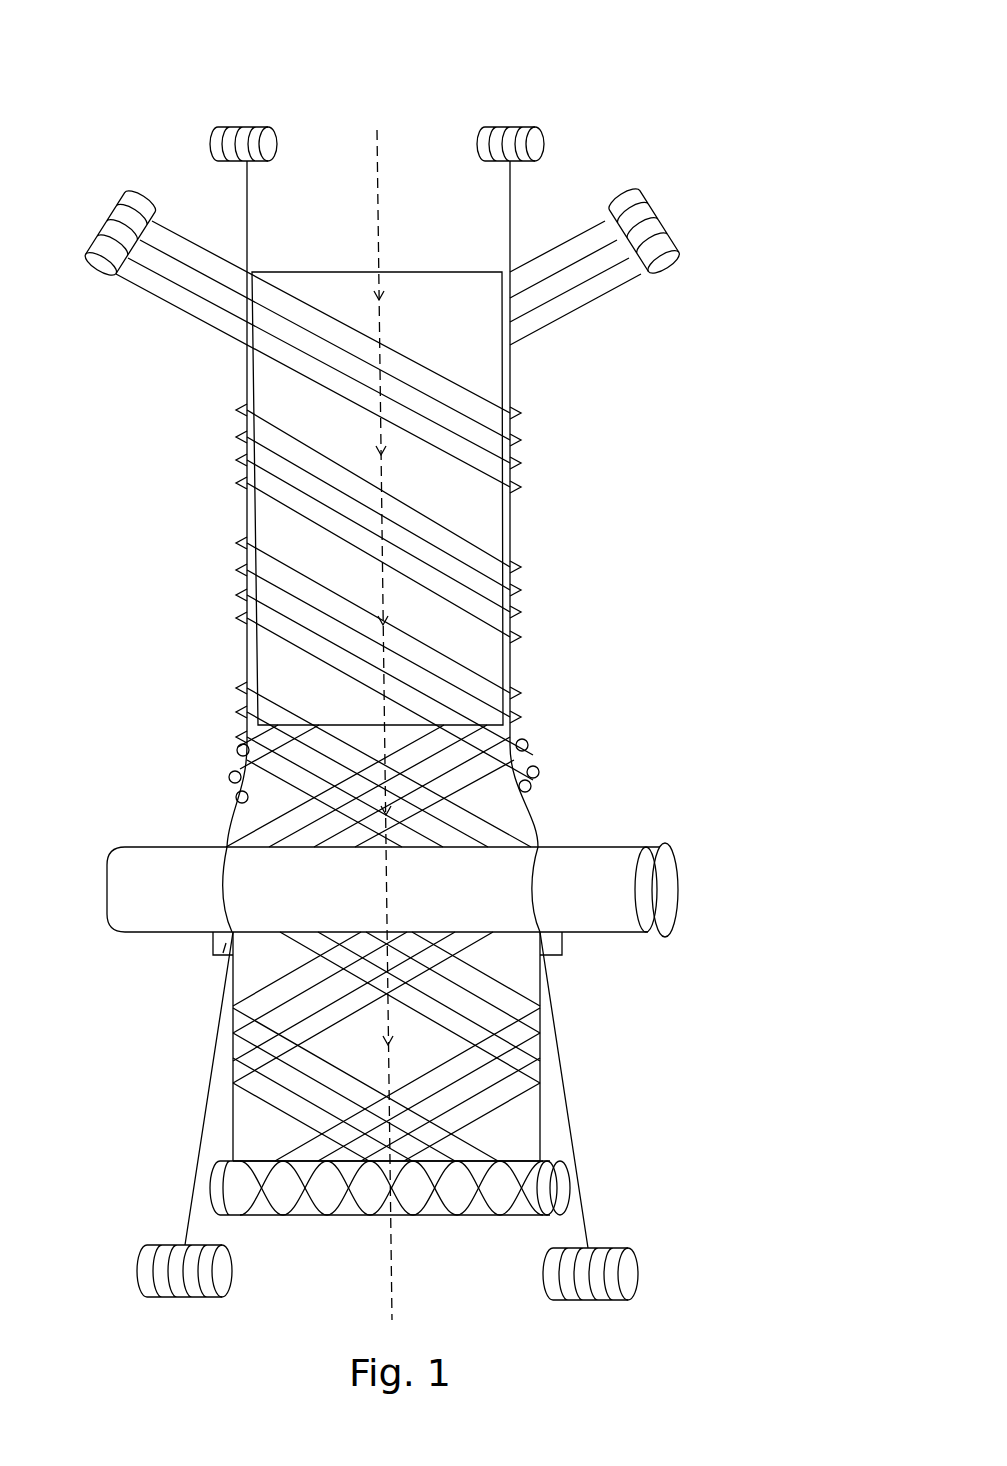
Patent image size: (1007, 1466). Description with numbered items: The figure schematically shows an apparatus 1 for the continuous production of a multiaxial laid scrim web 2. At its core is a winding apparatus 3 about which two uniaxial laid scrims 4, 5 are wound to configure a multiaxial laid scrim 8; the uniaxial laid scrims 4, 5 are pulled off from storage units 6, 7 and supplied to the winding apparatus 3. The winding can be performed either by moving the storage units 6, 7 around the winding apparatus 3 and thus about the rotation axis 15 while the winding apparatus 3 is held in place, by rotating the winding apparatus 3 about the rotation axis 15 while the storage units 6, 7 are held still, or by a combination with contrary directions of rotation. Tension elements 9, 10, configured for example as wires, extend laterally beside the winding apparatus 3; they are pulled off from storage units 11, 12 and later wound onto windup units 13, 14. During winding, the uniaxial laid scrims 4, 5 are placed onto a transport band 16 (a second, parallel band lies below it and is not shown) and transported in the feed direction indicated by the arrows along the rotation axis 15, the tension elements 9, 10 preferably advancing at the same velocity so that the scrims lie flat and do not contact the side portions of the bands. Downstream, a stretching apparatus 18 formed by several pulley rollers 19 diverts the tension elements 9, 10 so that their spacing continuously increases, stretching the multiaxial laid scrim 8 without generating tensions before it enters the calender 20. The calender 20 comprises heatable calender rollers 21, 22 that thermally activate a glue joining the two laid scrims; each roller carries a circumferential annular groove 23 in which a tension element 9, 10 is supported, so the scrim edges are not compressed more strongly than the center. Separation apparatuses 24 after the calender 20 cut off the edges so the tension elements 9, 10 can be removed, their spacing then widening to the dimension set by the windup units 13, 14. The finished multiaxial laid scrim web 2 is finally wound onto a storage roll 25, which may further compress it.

The apparatus 1 is at (680, 493).
The multiaxial laid scrim web 2 is at (472, 1080).
The winding apparatus 3 is at (477, 522).
The uniaxial laid scrim 4 is at (195, 268).
The uniaxial laid scrim 5 is at (553, 300).
The storage unit 6 is at (112, 254).
The storage unit 7 is at (655, 231).
The multiaxial laid scrim 8 is at (524, 748).
The tension element 9 is at (246, 207).
The tension element 10 is at (512, 199).
The storage unit 11 is at (233, 120).
The storage unit 12 is at (533, 118).
The windup unit 13 is at (176, 1290).
The windup unit 14 is at (603, 1288).
The rotation axis 15 is at (377, 203).
The transport band 16 is at (475, 356).
The stretching apparatus 18 is at (230, 768).
The pulley rollers 19 is at (224, 777).
The calender 20 is at (455, 931).
The calender roller 21 is at (612, 925).
The calender roller 22 is at (667, 923).
The groove 23 is at (530, 890).
The separation apparatus 24 is at (217, 955).
The storage roll 25 is at (552, 1190).